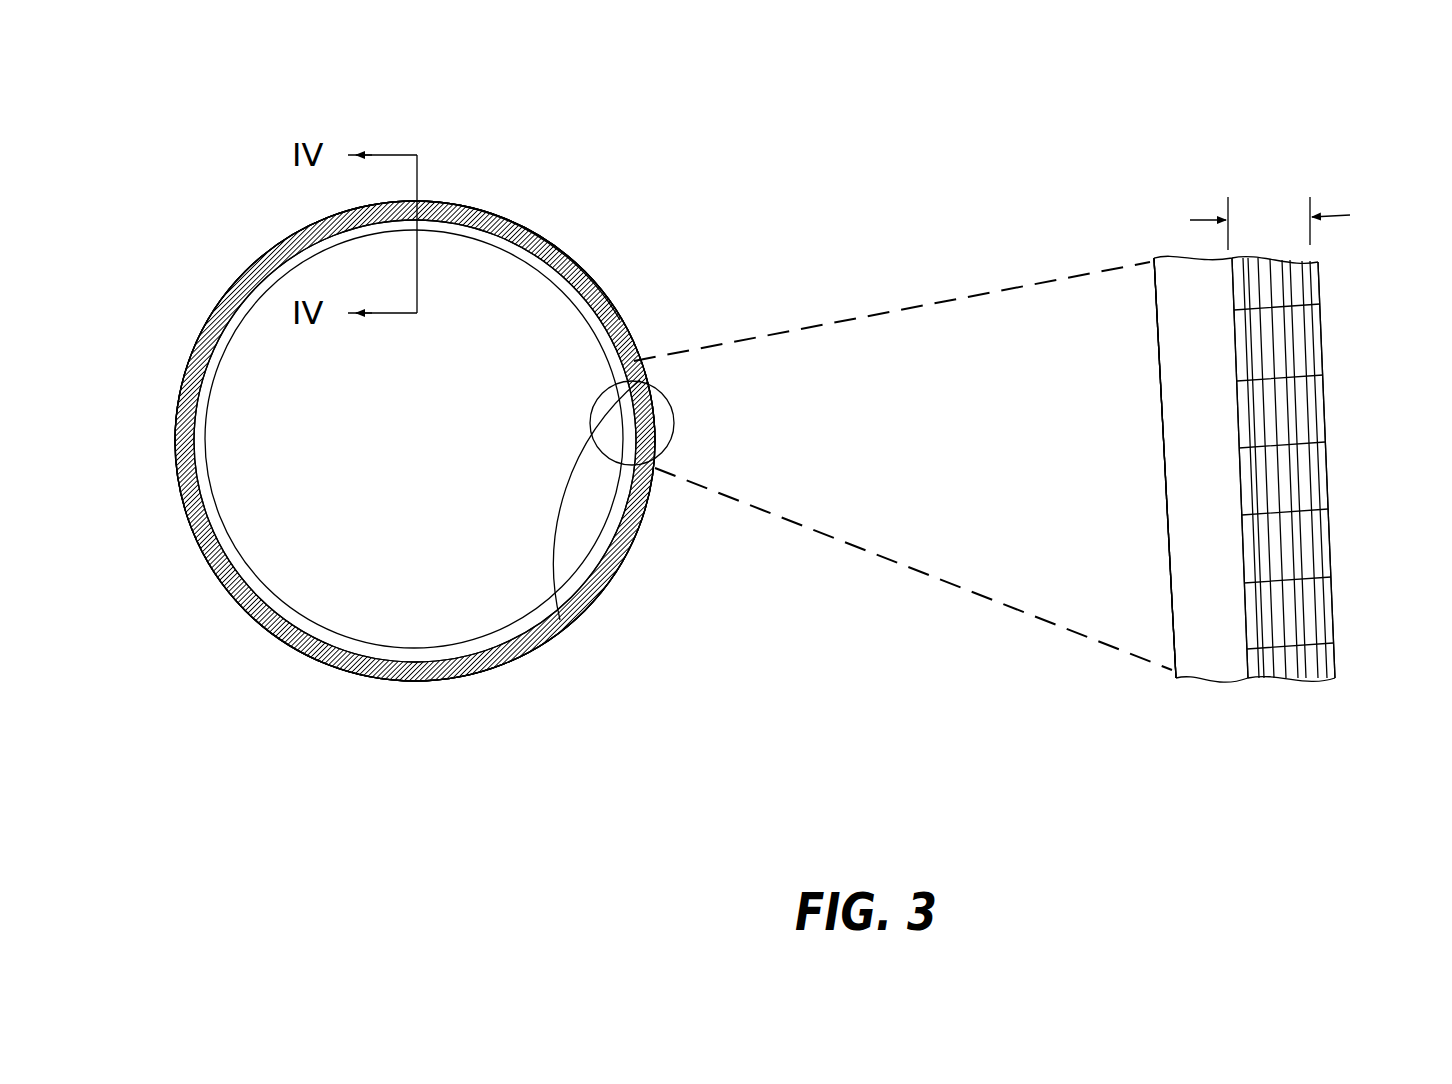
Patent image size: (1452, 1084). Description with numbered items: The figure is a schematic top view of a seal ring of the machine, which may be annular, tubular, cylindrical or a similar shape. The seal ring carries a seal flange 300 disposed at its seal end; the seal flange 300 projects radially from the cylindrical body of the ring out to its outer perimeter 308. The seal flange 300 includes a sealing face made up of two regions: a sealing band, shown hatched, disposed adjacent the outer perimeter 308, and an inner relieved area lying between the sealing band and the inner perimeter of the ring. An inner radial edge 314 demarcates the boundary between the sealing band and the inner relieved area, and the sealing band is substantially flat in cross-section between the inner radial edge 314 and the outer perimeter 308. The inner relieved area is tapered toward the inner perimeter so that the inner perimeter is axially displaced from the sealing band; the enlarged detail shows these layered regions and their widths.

The seal flange 300 is at (565, 253).
The outer perimeter 308 is at (632, 530).
The inner radial edge 314 is at (1247, 498).